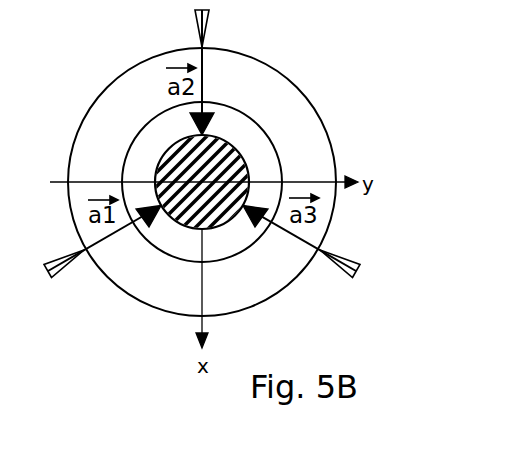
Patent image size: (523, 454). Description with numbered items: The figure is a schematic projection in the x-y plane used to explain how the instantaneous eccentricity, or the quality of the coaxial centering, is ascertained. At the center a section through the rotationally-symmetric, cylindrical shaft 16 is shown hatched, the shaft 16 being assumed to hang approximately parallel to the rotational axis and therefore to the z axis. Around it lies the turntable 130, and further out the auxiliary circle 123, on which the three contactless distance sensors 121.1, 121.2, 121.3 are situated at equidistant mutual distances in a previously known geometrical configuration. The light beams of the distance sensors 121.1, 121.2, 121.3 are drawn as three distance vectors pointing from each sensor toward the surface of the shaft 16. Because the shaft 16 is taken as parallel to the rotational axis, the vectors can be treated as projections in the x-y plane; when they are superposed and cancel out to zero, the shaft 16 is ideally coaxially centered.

The rotationally-symmetric shaft 16 is at (235, 148).
The auxiliary circle 123 is at (326, 119).
The turntable 130 is at (281, 162).
The distance sensor 121.1 is at (72, 257).
The distance sensor 121.2 is at (204, 30).
The distance sensor 121.3 is at (336, 262).